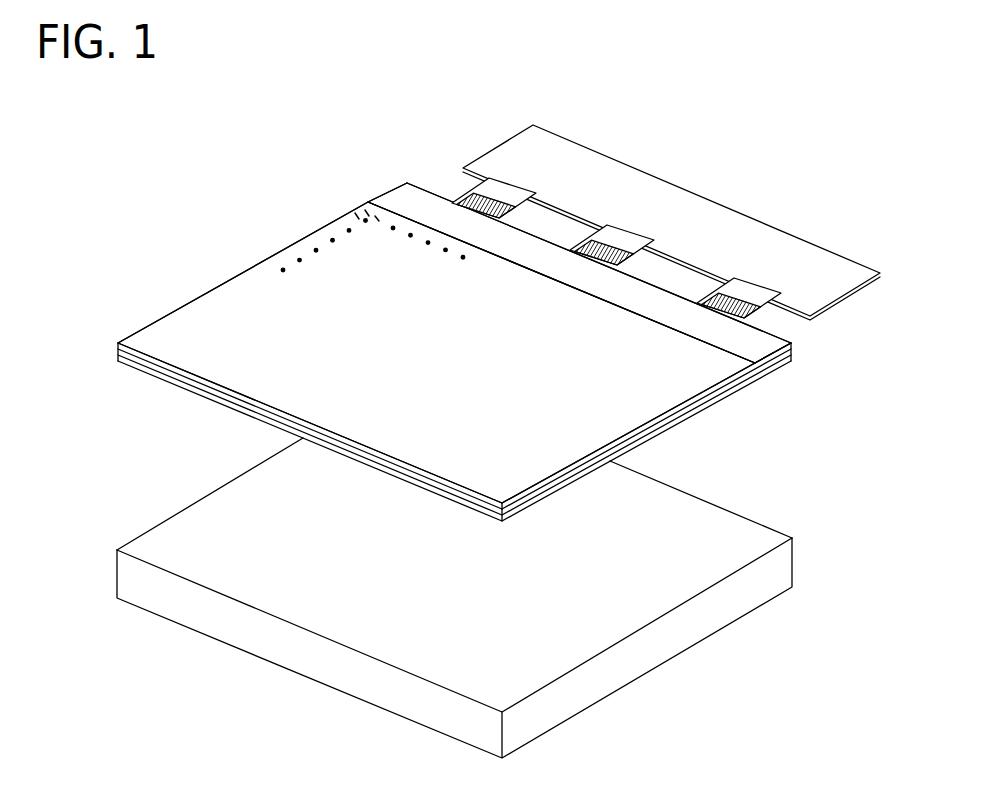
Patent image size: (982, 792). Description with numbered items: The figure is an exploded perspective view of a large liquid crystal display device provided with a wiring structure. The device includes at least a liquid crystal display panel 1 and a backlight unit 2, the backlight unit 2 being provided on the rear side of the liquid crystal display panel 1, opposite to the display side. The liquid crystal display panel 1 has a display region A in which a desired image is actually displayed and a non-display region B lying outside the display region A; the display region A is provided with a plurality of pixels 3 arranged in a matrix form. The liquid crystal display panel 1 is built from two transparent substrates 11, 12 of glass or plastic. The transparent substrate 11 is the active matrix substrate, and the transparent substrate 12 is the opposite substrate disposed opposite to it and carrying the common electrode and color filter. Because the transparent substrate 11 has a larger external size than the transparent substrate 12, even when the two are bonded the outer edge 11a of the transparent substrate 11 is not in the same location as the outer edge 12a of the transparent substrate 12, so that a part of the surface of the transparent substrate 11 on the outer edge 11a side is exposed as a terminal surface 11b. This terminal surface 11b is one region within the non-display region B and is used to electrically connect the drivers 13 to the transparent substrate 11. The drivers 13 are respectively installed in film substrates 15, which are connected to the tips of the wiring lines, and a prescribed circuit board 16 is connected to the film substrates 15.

The liquid crystal display panel 1 is at (146, 305).
The backlight unit 2 is at (118, 582).
The pixels 3 is at (358, 208).
The transparent substrate 11 is at (116, 358).
The outer edge of transparent substrate 11 11a is at (780, 333).
The terminal surface 11b is at (656, 308).
The transparent substrate 12 is at (118, 345).
The outer edge of transparent substrate 12 12a is at (782, 358).
The drivers 13 is at (517, 182).
The film substrates 15 is at (502, 175).
The circuit board 16 is at (845, 270).
The display region A is at (307, 325).
The non-display region B is at (431, 211).